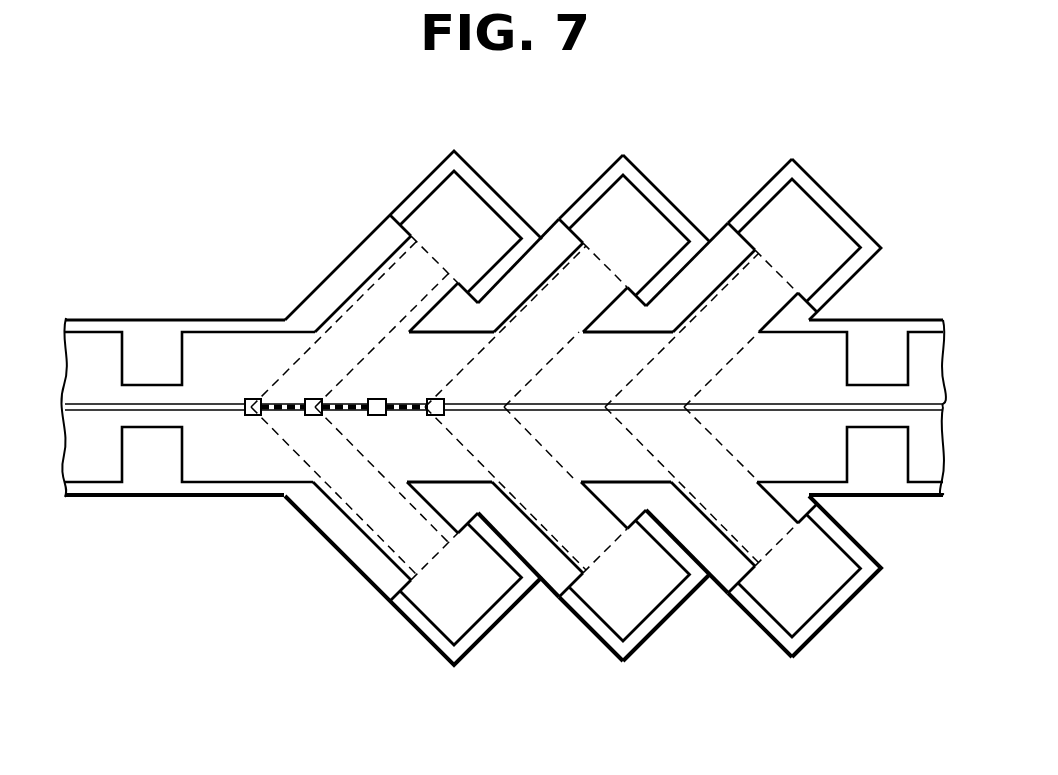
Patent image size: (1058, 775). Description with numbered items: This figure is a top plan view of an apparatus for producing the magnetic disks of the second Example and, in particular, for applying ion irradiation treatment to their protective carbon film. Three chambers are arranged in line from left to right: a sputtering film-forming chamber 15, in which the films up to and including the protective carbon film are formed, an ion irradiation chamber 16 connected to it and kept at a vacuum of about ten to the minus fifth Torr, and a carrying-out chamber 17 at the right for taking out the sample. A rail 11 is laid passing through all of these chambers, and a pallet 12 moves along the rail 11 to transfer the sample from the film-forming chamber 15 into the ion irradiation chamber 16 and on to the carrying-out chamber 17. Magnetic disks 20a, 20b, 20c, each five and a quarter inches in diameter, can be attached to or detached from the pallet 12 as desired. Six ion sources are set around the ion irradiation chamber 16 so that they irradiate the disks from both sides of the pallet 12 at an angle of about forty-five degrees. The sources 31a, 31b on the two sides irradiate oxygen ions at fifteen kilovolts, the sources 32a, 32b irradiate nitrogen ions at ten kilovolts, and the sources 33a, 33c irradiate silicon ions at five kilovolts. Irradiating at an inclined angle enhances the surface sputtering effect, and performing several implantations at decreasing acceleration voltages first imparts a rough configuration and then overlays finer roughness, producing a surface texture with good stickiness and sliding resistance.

The rail 11 is at (777, 406).
The pallet 12 is at (248, 400).
The sputtering film-forming chamber 15 is at (97, 348).
The ion irradiation chamber 16 is at (822, 462).
The carrying-out chamber 17 is at (923, 343).
The magnetic disk 20a is at (265, 403).
The magnetic disk 20b is at (328, 417).
The magnetic disk 20c is at (392, 417).
The ion source 31a is at (496, 203).
The ion source 32a is at (676, 205).
The ion source 33a is at (827, 198).
The ion source 31b is at (503, 617).
The ion source 32b is at (680, 615).
The branch electrode 33c is at (826, 612).